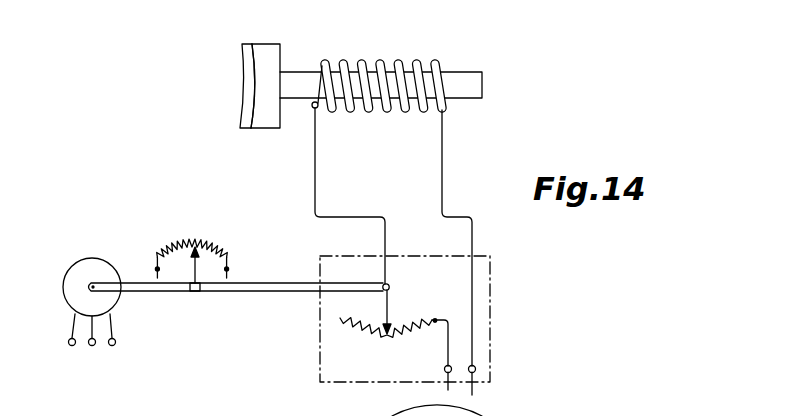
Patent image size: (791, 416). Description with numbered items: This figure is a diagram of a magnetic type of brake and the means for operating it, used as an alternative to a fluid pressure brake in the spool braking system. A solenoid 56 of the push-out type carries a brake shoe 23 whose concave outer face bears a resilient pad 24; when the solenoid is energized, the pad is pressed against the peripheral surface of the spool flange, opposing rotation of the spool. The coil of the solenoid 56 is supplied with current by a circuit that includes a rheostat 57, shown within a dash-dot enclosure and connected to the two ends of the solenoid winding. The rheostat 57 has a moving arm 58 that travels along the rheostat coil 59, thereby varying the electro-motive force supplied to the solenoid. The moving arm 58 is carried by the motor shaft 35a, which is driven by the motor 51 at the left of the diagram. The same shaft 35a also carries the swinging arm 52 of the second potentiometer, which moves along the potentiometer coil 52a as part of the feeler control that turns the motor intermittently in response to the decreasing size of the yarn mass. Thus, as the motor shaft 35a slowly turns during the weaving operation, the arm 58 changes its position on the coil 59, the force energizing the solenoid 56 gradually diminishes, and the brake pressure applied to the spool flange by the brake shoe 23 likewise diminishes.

The brake shoe 23 is at (263, 47).
The resilient pad 24 is at (248, 64).
The solenoid 56 is at (349, 56).
The rheostat 57 is at (490, 280).
The motor 51 is at (90, 262).
The motor shaft 35a is at (128, 289).
The potentiometer coil 52a is at (205, 247).
The swinging arm 52 is at (195, 283).
The moving arm 58 is at (393, 310).
The rheostat coil 59 is at (366, 337).